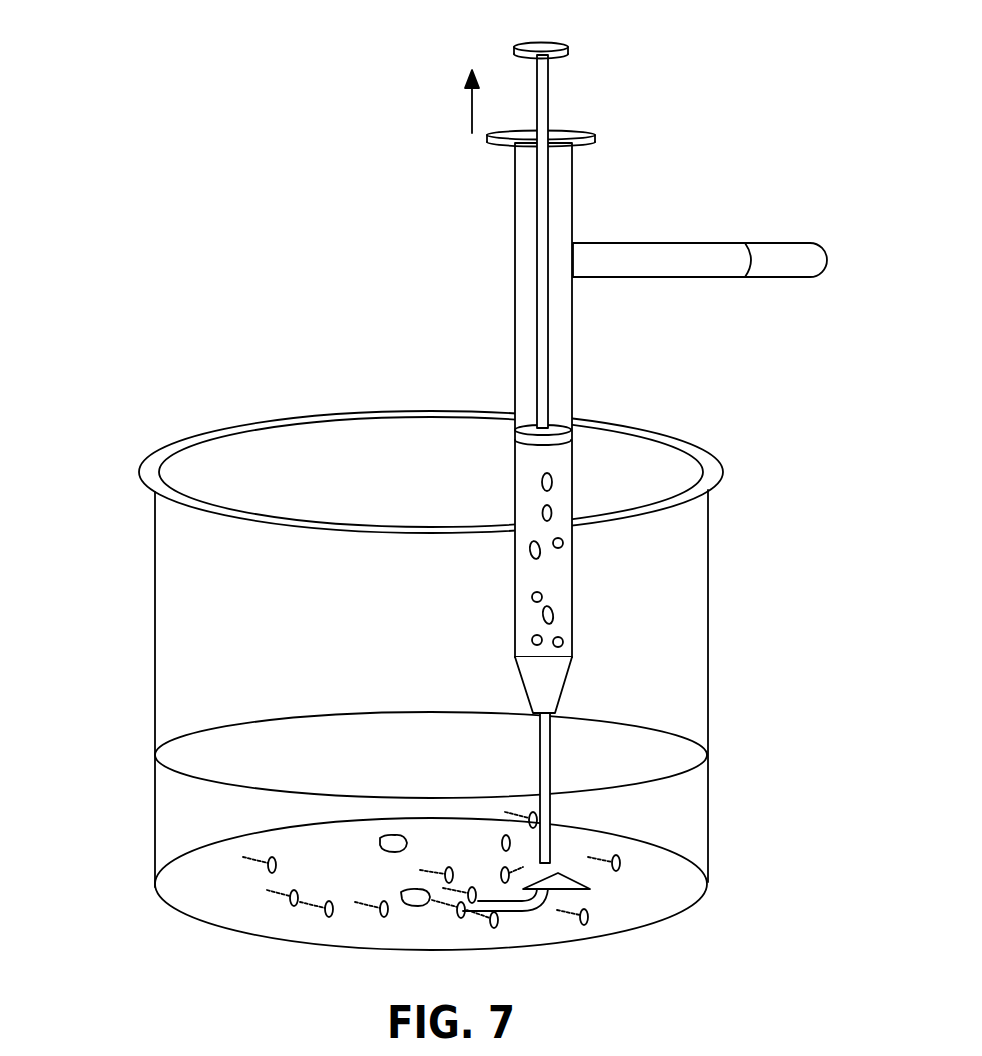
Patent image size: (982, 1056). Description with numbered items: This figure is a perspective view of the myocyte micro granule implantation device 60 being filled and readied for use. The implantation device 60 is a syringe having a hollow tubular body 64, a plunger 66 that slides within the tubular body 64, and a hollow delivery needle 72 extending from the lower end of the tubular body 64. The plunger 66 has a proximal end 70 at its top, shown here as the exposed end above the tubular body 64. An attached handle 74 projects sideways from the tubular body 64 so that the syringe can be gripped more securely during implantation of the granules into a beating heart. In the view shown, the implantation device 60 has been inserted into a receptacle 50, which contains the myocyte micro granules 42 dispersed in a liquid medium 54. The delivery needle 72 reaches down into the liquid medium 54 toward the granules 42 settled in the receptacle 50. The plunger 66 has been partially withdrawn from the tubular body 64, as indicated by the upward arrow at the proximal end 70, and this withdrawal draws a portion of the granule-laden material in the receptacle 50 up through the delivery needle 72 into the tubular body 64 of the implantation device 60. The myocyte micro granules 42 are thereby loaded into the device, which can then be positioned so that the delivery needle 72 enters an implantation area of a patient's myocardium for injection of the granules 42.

The myocyte micro granules 42 is at (563, 624).
The receptacle 50 is at (155, 617).
The liquid medium 54 is at (191, 832).
The myocyte micro granule implantation device 60 is at (452, 299).
The hollow tubular body 64 is at (572, 322).
The plunger 66 is at (537, 330).
The proximal end of the plunger 70 is at (569, 48).
The hollow delivery needle 72 is at (537, 760).
The handle 74 is at (800, 277).